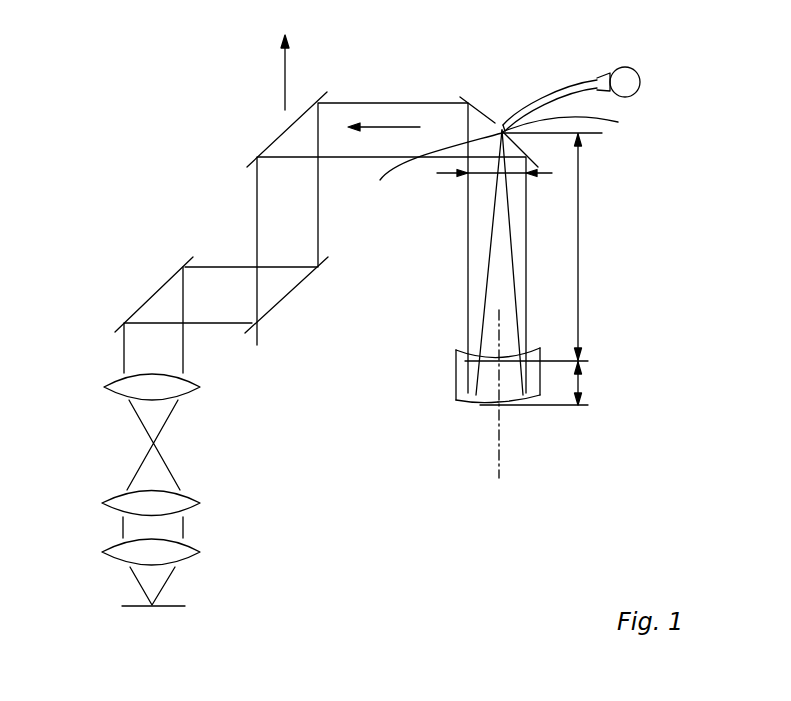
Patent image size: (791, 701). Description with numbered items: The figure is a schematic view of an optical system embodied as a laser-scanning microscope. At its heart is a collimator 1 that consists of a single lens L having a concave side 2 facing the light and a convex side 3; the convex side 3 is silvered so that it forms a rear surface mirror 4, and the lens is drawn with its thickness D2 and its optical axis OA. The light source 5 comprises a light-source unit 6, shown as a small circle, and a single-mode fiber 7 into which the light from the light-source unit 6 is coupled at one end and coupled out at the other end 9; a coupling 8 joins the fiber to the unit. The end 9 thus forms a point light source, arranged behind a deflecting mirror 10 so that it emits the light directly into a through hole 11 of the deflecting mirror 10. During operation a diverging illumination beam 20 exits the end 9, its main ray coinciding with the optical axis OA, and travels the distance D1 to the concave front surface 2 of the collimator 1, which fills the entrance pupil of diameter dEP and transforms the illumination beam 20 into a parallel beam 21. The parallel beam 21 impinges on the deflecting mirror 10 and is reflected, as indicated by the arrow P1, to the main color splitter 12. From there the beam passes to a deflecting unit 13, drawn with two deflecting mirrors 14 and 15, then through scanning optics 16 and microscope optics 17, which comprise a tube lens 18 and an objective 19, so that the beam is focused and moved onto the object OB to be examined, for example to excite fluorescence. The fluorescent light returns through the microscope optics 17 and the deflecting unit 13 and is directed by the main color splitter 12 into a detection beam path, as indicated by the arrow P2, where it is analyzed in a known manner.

The collimator 1 is at (455, 393).
The concave side 2 is at (462, 345).
The convex side 3 is at (460, 398).
The rear surface mirror 4 is at (480, 401).
The light source 5 is at (556, 72).
The light-source unit 6 is at (640, 82).
The single-mode fiber 7 is at (530, 97).
The coupling 8 is at (605, 75).
The end 9 is at (571, 135).
The deflecting mirror 10 is at (462, 97).
The through hole 11 is at (421, 170).
The main color splitter 12 is at (272, 137).
The deflecting unit 13 is at (184, 301).
The deflecting mirror 14 is at (272, 305).
The deflecting mirror 15 is at (158, 278).
The scanning optics 16 is at (190, 393).
The microscope optics 17 is at (206, 529).
The tube lens 18 is at (190, 498).
The objective 19 is at (195, 553).
The diverging illumination beam 20 is at (485, 253).
The parallel beam 21 is at (468, 227).
The single lens L is at (456, 365).
The optical axis OA is at (497, 467).
The object OB is at (175, 605).
The diameter of the entrance pupil dEP is at (480, 178).
The distance of the front surface from the point light source D1 is at (563, 247).
The thickness of the lens D2 is at (544, 383).
The arrow P1 is at (388, 127).
The arrow P2 is at (285, 68).